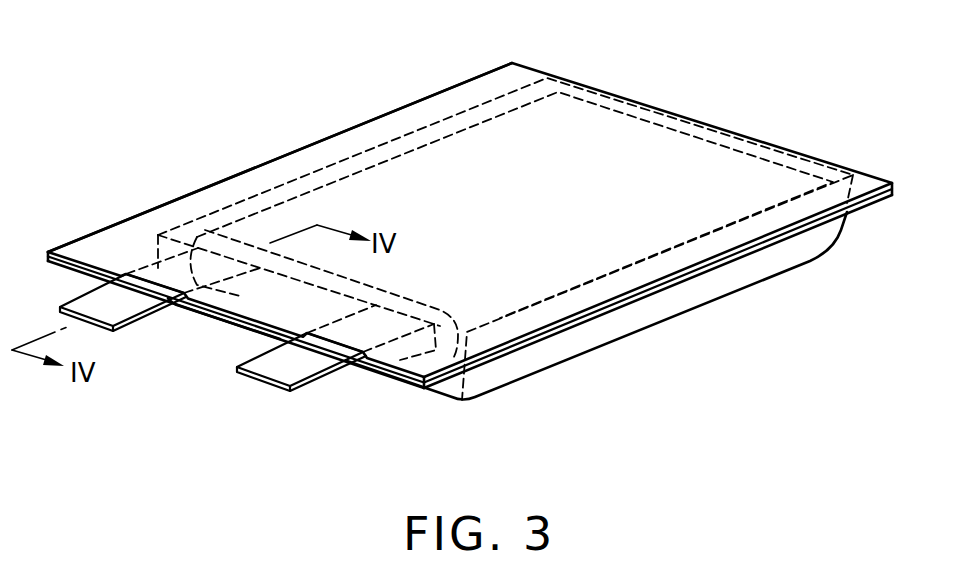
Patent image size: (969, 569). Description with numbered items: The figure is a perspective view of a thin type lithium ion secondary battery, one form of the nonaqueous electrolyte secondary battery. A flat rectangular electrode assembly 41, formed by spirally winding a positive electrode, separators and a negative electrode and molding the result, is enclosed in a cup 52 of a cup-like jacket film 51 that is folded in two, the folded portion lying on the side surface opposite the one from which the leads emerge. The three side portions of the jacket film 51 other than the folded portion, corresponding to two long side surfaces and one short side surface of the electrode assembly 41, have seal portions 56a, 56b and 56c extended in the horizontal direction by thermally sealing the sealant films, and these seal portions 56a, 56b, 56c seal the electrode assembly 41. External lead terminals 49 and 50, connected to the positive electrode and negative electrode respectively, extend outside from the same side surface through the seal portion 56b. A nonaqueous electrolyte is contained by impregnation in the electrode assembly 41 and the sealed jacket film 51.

The electrode assembly 41 is at (407, 152).
The external lead terminal 49 is at (145, 302).
The external lead terminal 50 is at (308, 366).
The jacket film 51 is at (268, 112).
The cup 52 is at (172, 220).
The seal portion 56a is at (212, 194).
The seal portion 56b is at (422, 368).
The seal portion 56c is at (627, 284).